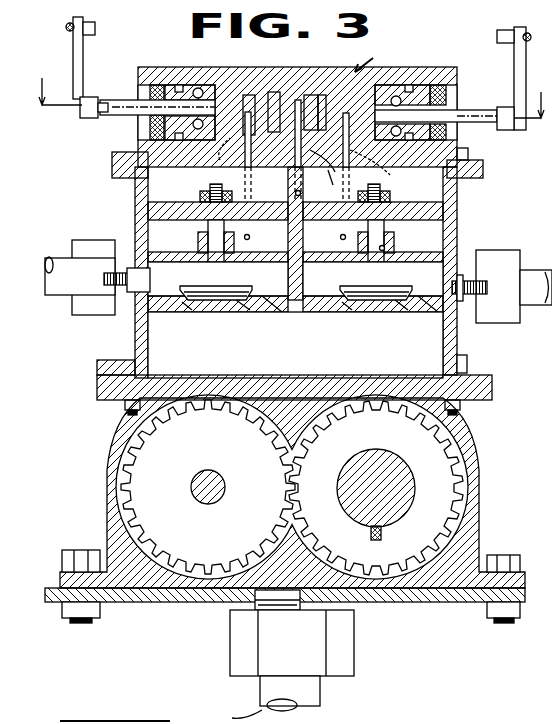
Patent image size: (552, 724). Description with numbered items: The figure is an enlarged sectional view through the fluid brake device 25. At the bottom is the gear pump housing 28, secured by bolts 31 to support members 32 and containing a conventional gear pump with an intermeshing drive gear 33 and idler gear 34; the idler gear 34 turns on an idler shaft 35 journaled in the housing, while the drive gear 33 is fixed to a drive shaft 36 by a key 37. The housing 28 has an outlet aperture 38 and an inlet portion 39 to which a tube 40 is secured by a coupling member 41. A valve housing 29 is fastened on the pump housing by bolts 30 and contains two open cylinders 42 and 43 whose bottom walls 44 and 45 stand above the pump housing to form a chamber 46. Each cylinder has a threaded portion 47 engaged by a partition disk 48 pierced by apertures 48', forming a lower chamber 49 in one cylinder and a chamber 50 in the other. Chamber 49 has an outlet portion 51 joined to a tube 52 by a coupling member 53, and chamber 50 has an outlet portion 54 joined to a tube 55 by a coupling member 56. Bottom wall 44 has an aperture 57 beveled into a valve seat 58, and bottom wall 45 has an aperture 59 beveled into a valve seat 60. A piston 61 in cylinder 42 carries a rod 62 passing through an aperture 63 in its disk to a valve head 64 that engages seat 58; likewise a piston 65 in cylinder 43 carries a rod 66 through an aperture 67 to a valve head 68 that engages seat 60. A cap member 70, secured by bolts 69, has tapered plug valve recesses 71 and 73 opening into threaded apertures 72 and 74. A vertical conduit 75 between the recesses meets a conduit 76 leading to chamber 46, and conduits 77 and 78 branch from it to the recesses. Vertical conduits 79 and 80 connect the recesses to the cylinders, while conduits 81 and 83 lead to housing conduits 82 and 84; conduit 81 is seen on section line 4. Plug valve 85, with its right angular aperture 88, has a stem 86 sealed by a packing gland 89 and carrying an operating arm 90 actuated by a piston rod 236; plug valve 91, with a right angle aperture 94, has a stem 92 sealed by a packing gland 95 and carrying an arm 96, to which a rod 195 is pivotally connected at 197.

The rod 195 is at (68, 30).
The pivotal connection 197 is at (90, 35).
The section line 4 is at (291, 89).
The valve stem 92 is at (128, 106).
The operating arm 96 is at (80, 117).
The packing gland 95 is at (150, 122).
The threaded aperture 74 is at (155, 85).
The plug valve 91 is at (226, 95).
The tapered plug valve recess 73 is at (249, 95).
The cap member 70 is at (274, 92).
The conduit 78 is at (310, 95).
The conduit 77 is at (322, 95).
The fluid brake device 25 is at (362, 55).
The tapered plug valve recess 71 is at (358, 95).
The plug valve 85 is at (385, 95).
The threaded aperture 72 is at (412, 85).
The packing gland 89 is at (440, 85).
The valve stem 86 is at (468, 110).
The operating arm 90 is at (514, 57).
The piston rod 236 is at (528, 40).
The bolts 69 is at (468, 154).
The conduit 83 is at (220, 160).
The vertical conduit 80 is at (294, 172).
The right angle aperture 94 is at (258, 125).
The vertical conduit 75 is at (312, 160).
The right angular aperture 88 is at (336, 181).
The vertical conduit 79 is at (360, 128).
The conduit 81 is at (372, 163).
The cylinder 43 is at (158, 190).
The piston 65 is at (182, 202).
The conduit 76 is at (300, 193).
The piston 61 is at (408, 210).
The cylinder 42 is at (443, 199).
The conduit 84 is at (249, 236).
The aperture 67 is at (198, 239).
The rod 66 is at (224, 229).
The conduit 82 is at (340, 237).
The rod 62 is at (384, 230).
The aperture 63 is at (384, 248).
The tube 55 is at (56, 262).
The threaded portion 47 is at (150, 256).
The coupling member 53 is at (506, 252).
The tube 52 is at (535, 272).
The outlet portion 54 is at (114, 280).
The partition disk member 48 is at (293, 279).
The valve head 68 is at (243, 286).
The apertures 48' is at (350, 282).
The valve head 64 is at (400, 296).
The outlet portion 51 is at (476, 284).
The coupling member 56 is at (72, 303).
The chamber 50 is at (170, 300).
The valve seat 60 is at (185, 303).
The aperture 59 is at (225, 302).
The bottom wall 45 is at (262, 302).
The chamber 49 is at (322, 298).
The valve seat 58 is at (343, 303).
The aperture 57 is at (384, 304).
The bottom wall 44 is at (412, 300).
The chamber 46 is at (160, 331).
The valve housing 29 is at (467, 345).
The bolts 30 is at (467, 362).
The outlet aperture 38 is at (310, 384).
The idler gear 34 is at (138, 475).
The gear pump housing 28 is at (107, 506).
The idler shaft 35 is at (207, 502).
The drive shaft 36 is at (408, 505).
The drive gear 33 is at (452, 488).
The key 37 is at (382, 538).
The bolts 31 is at (512, 552).
The inlet portion 39 is at (258, 608).
The coupling member 41 is at (237, 656).
The support members 32 is at (470, 604).
The tube 40 is at (320, 694).